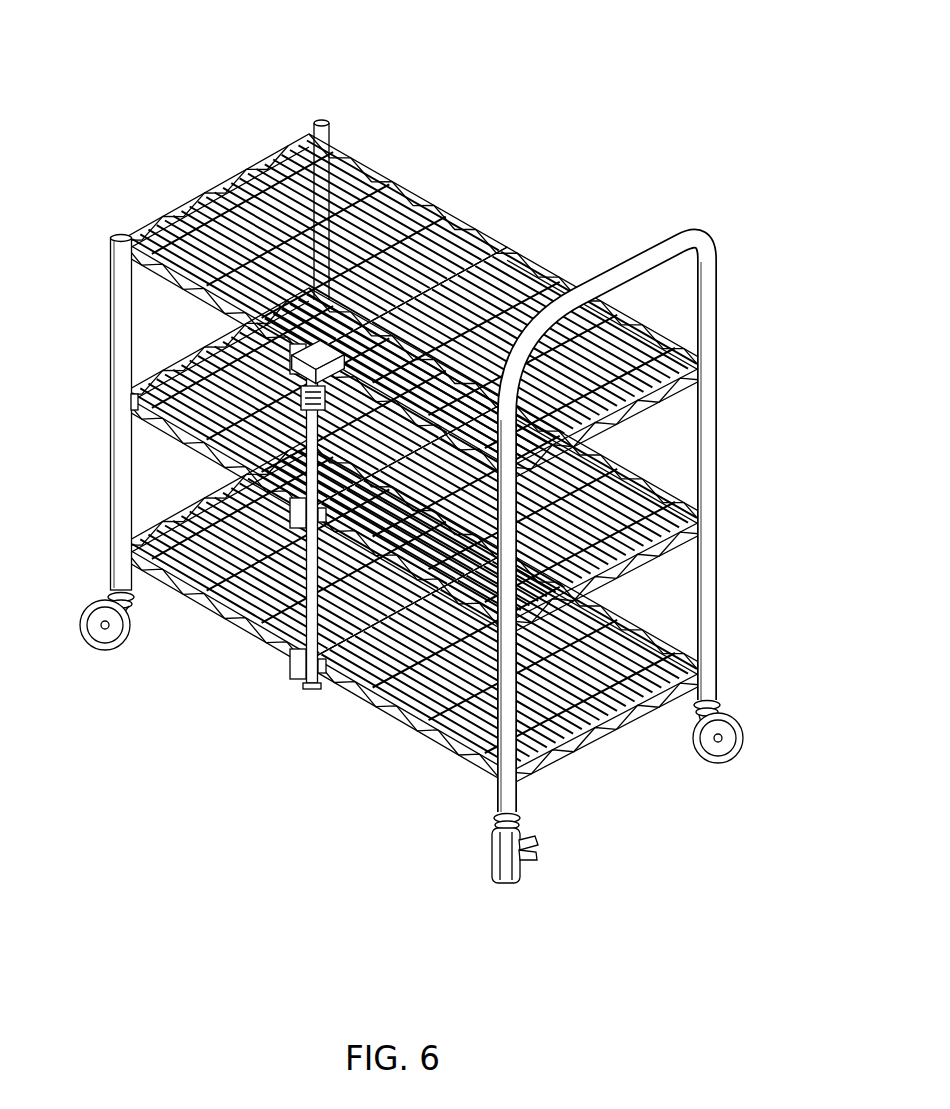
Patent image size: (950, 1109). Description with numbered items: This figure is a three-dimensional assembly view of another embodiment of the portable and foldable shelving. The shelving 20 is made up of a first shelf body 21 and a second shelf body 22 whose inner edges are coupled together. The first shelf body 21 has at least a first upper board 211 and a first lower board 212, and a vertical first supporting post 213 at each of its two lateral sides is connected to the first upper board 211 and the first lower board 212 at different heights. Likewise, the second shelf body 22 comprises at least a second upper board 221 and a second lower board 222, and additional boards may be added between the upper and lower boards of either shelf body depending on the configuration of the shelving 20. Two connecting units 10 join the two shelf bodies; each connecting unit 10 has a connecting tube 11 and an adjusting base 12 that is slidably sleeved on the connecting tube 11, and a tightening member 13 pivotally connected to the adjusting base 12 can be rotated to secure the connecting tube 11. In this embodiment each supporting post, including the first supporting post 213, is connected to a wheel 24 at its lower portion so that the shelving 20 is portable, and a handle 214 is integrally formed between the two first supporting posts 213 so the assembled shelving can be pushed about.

The shelving 20 is at (441, 481).
The first shelf body 21 is at (559, 537).
The first upper board 211 is at (667, 403).
The first lower board 212 is at (507, 650).
The first supporting post 213 is at (440, 740).
The handle 214 is at (640, 258).
The second shelf body 22 is at (283, 353).
The second upper board 221 is at (358, 197).
The second lower board 222 is at (190, 600).
The connecting unit 10 is at (202, 503).
The connecting tube 11 is at (287, 634).
The adjusting base 12 is at (300, 362).
The tightening member 13 is at (258, 416).
The wheel 24 is at (480, 862).